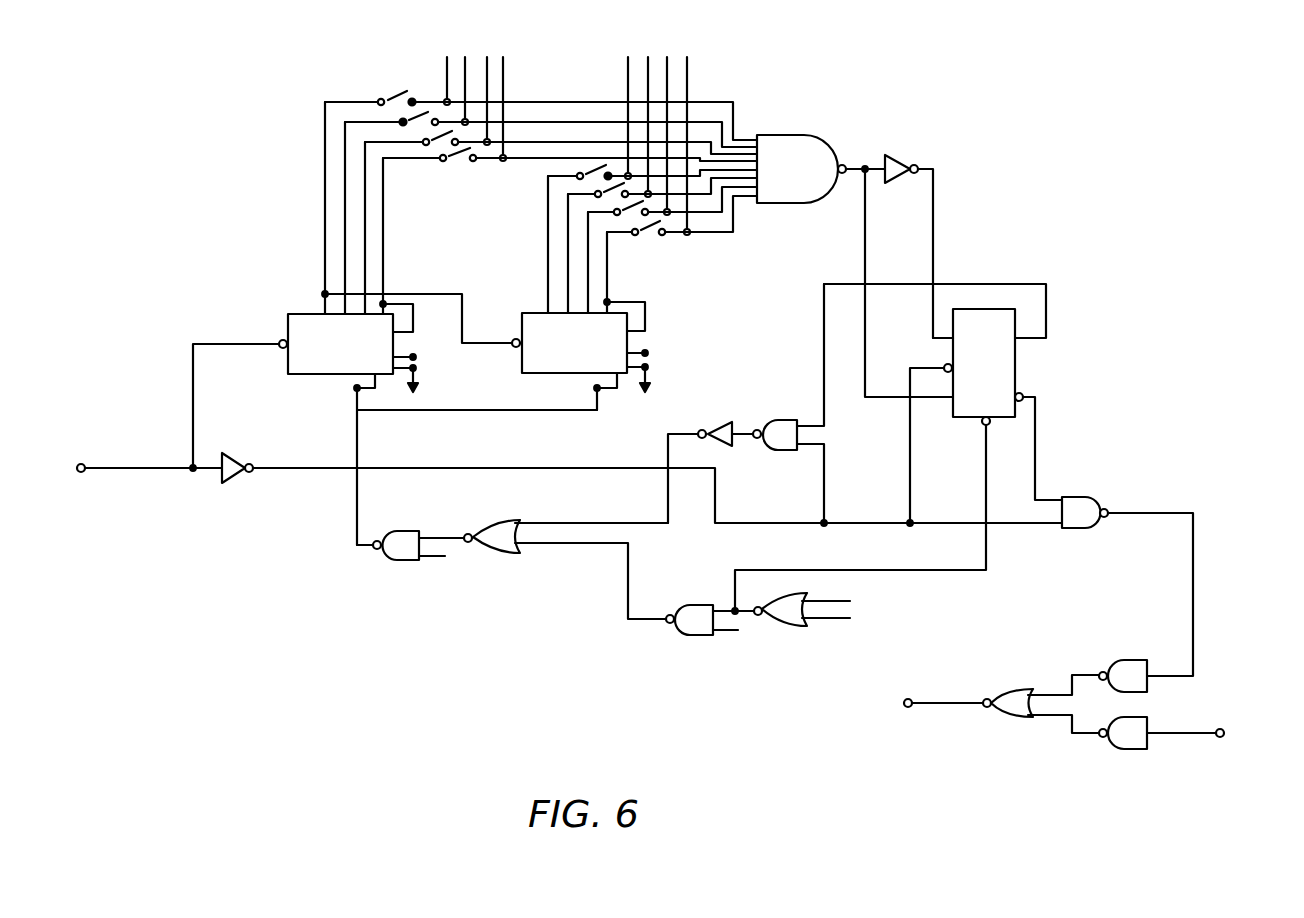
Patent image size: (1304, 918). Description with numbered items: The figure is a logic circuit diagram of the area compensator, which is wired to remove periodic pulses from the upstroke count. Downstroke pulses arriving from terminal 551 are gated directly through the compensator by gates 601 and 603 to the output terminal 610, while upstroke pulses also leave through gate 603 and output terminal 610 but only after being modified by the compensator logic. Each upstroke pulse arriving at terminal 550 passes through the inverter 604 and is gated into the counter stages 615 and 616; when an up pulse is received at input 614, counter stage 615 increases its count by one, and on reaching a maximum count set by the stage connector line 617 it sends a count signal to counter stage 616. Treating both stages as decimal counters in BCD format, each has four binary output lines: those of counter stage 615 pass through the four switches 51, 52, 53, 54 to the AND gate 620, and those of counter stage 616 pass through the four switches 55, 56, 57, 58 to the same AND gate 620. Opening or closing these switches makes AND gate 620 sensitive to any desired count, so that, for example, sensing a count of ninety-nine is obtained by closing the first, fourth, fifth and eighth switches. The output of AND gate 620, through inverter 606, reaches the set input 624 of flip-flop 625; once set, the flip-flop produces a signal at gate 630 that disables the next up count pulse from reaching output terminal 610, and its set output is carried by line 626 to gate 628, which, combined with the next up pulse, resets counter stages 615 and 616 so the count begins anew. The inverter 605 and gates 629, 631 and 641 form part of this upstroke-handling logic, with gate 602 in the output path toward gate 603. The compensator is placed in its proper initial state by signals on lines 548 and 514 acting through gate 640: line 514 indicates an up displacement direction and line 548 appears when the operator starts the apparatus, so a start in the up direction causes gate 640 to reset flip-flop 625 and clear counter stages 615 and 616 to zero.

The switch 51 is at (397, 93).
The switch 52 is at (400, 120).
The switch 53 is at (426, 141).
The switch 54 is at (455, 163).
The switch 55 is at (583, 173).
The switch 56 is at (600, 191).
The switch 57 is at (619, 209).
The switch 58 is at (645, 237).
The line 514 is at (838, 619).
The line 548 is at (835, 601).
The terminal 550 is at (87, 463).
The terminal 551 is at (1222, 728).
The gate 601 is at (1132, 750).
The gate 602 is at (1128, 660).
The gate 603 is at (1018, 690).
The inverter 604 is at (229, 453).
The inverter 605 is at (710, 424).
The inverter 606 is at (900, 162).
The output terminal 610 is at (912, 698).
The input 614 is at (250, 340).
The counter stage 615 is at (353, 353).
The counter stage 616 is at (586, 361).
The stage connector line 617 is at (463, 317).
The AND gate 620 is at (801, 169).
The set input 624 is at (940, 339).
The flip-flop 625 is at (1020, 368).
The line 626 is at (1050, 302).
The gate 628 is at (783, 420).
The gate 629 is at (690, 636).
The gate 630 is at (1085, 497).
The gate 631 is at (410, 531).
The gate 640 is at (790, 628).
The gate 641 is at (505, 520).